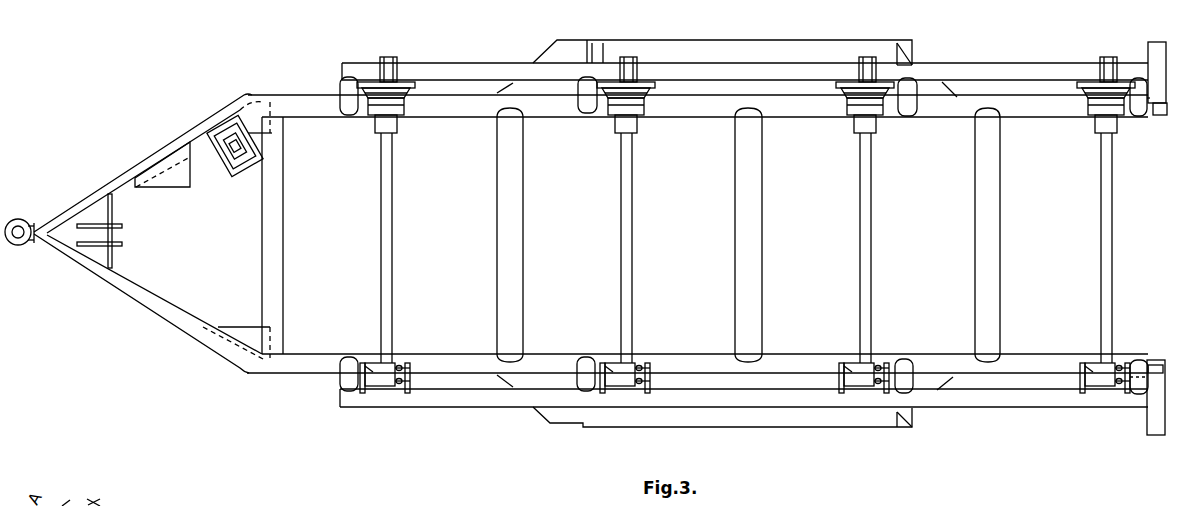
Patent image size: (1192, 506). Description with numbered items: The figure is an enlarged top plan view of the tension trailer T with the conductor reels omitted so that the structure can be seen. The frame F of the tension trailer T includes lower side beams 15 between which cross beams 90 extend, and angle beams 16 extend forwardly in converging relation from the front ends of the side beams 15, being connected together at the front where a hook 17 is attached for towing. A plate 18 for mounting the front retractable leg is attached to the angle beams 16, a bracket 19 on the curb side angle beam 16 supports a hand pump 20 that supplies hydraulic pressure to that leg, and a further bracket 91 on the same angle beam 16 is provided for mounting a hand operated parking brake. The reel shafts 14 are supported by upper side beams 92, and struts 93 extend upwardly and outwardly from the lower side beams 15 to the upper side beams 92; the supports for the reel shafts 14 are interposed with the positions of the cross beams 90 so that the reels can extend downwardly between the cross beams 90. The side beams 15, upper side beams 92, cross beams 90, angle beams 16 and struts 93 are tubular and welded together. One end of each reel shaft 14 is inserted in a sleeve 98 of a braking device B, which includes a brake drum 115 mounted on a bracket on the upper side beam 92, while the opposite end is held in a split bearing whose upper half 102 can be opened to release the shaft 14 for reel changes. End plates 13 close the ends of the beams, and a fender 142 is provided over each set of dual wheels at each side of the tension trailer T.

The end plate 13 is at (1163, 117).
The reel shaft 14 is at (392, 188).
The side beam 15 is at (688, 113).
The angle beam 16 is at (128, 175).
The hook 17 is at (8, 240).
The plate 18 is at (112, 257).
The bracket 19 is at (238, 175).
The hand pump 20 is at (212, 162).
The cross beam 90 is at (283, 187).
The bracket 91 is at (175, 187).
The upper side beam 92 is at (487, 60).
The strut 93 is at (342, 93).
The sleeve 98 is at (380, 117).
The upper half of split bearing 102 is at (378, 360).
The brake drum 115 is at (395, 92).
The fender 142 is at (710, 50).
The tension trailer T is at (250, 90).
The braking device B is at (404, 101).
The frame F is at (266, 377).